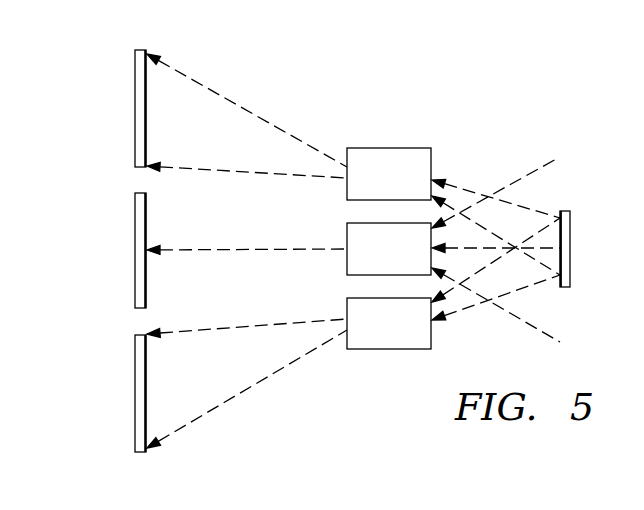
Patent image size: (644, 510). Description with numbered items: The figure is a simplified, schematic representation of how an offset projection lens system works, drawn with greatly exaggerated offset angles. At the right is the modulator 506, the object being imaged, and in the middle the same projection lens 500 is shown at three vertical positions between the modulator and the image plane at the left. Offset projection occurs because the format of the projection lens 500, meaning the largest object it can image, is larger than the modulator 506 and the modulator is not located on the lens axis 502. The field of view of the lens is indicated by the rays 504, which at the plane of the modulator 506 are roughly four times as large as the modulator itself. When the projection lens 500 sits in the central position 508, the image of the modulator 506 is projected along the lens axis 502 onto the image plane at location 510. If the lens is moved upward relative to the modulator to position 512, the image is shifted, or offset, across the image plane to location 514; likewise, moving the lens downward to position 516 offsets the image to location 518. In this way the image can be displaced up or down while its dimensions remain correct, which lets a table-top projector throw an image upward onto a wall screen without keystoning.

The projection lens 500 is at (370, 189).
The lens axis 502 is at (226, 252).
The rays 504 is at (521, 180).
The modulator 506 is at (571, 262).
The position 508 is at (347, 265).
The location 510 is at (135, 272).
The position 512 is at (389, 148).
The location 514 is at (135, 107).
The position 516 is at (390, 350).
The location 518 is at (135, 393).